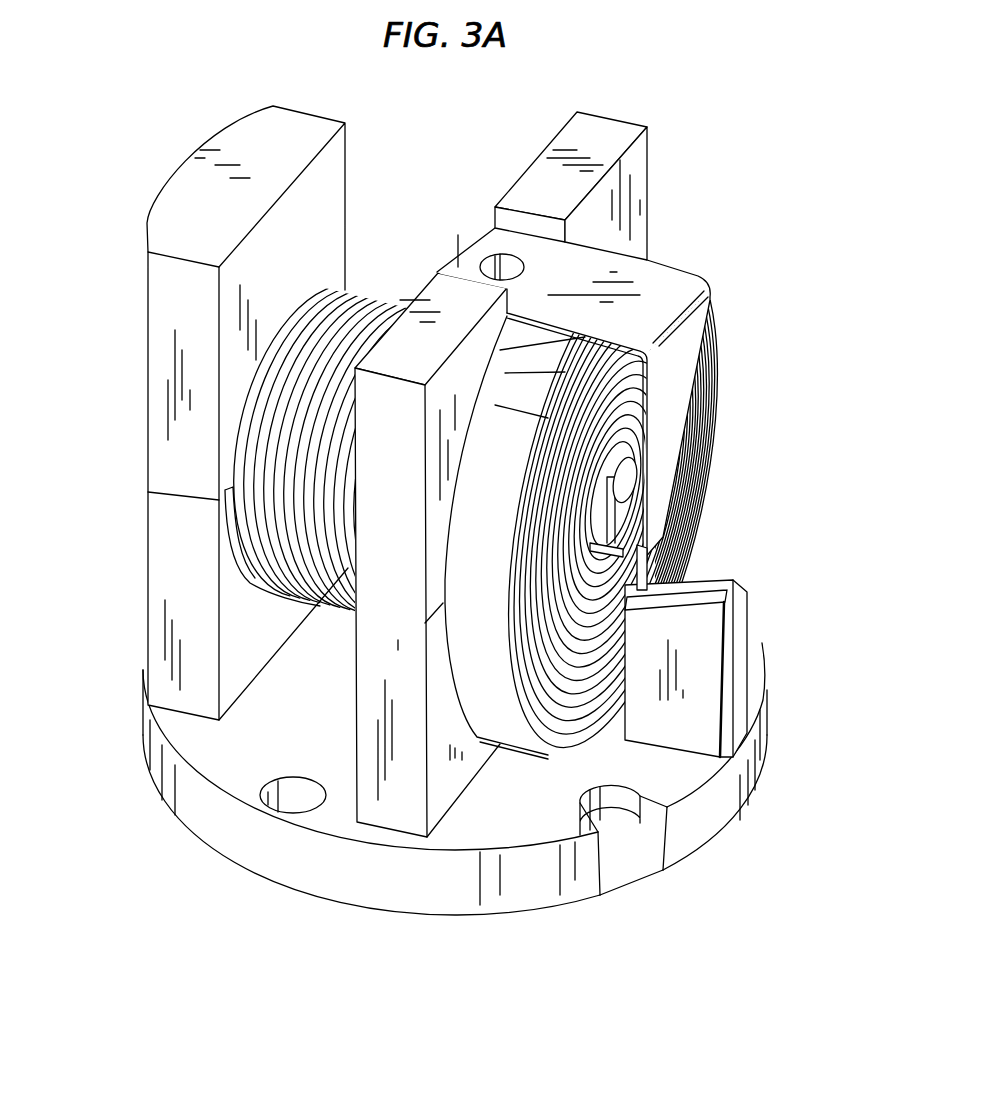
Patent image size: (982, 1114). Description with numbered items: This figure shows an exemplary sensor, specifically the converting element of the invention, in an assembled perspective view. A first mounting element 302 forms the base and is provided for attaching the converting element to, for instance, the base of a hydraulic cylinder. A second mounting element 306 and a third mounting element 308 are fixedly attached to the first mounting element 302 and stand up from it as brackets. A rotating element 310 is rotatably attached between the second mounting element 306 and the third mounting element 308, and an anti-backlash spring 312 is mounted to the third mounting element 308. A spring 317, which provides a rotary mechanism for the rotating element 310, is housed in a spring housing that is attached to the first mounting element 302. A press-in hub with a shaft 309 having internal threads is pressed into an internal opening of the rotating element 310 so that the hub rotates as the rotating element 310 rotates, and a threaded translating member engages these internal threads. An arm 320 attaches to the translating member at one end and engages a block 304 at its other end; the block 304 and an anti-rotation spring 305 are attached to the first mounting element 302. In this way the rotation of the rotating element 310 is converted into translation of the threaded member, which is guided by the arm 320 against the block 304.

The first mounting element 302 is at (692, 848).
The block 304 is at (740, 625).
The anti-rotation spring 305 is at (702, 720).
The second mounting element 306 is at (148, 590).
The third mounting element 308 is at (395, 812).
The shaft 309 is at (607, 527).
The rotating element 310 is at (384, 307).
The anti-backlash spring 312 is at (706, 307).
The spring 317 is at (718, 452).
The arm 320 is at (648, 575).